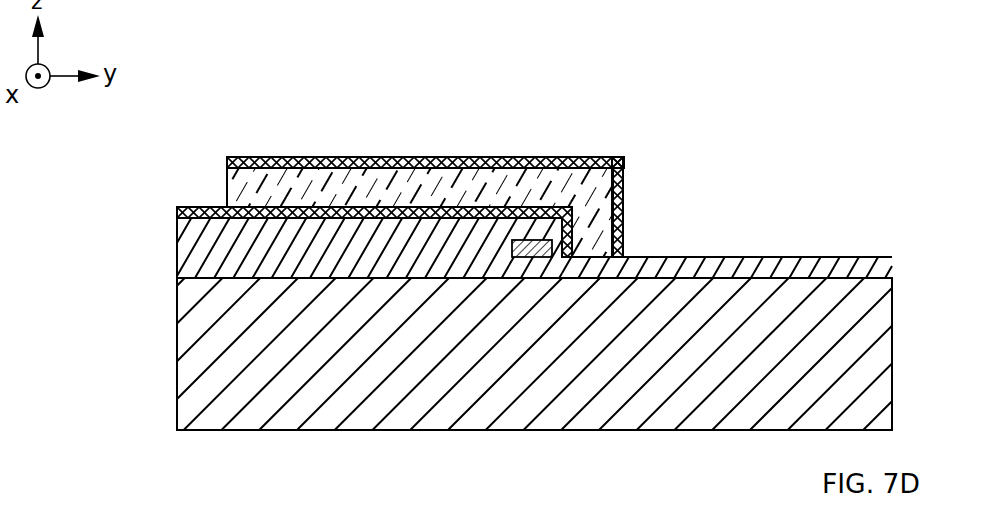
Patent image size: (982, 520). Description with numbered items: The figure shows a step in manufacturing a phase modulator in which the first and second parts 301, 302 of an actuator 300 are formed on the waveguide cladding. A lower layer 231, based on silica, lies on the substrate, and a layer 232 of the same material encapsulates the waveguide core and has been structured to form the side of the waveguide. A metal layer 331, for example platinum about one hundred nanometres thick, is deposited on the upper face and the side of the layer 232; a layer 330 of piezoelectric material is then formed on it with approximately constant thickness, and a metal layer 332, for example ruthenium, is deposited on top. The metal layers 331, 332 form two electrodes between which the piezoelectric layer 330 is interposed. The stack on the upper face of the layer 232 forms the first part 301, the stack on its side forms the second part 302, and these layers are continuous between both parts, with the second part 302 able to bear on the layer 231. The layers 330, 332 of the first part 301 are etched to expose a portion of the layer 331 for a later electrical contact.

The layer 231 is at (750, 262).
The layer 232 is at (220, 242).
The actuator 300 is at (537, 190).
The first part of the actuator 301 is at (523, 157).
The second part of the actuator 302 is at (624, 193).
The piezoelectric layer 330 is at (233, 180).
The metal layer 331 is at (177, 213).
The metal layer 332 is at (227, 158).